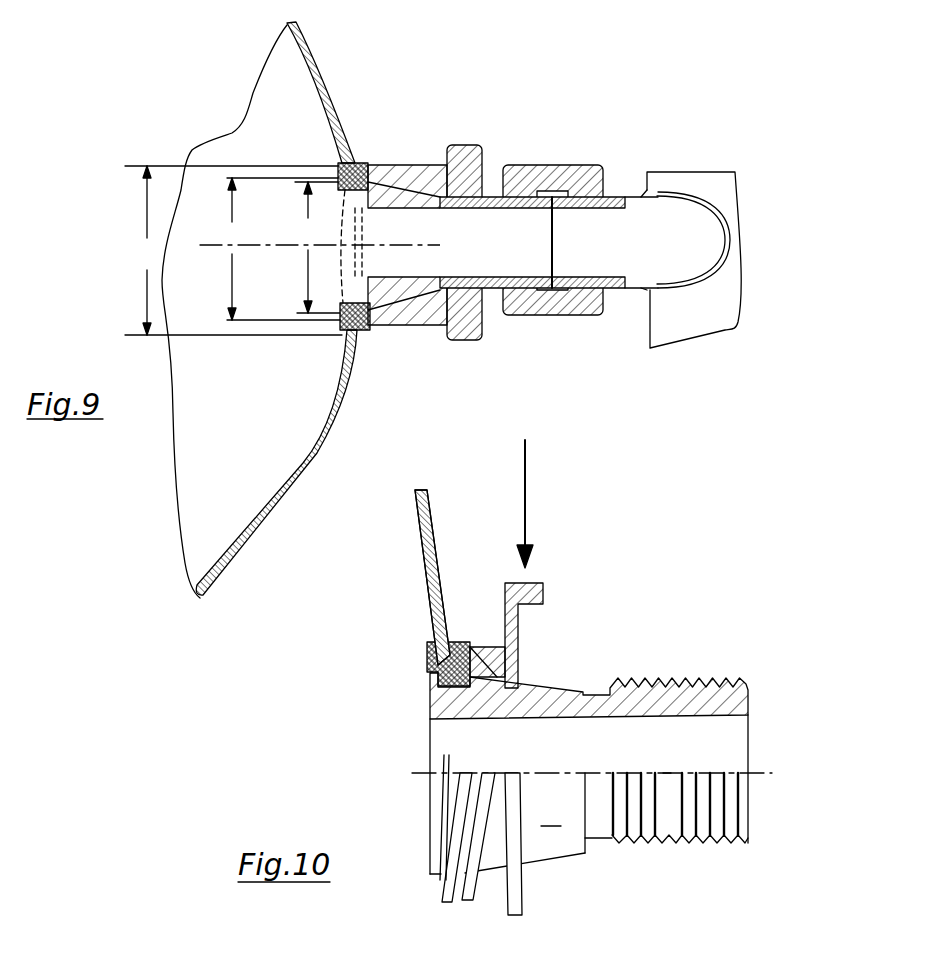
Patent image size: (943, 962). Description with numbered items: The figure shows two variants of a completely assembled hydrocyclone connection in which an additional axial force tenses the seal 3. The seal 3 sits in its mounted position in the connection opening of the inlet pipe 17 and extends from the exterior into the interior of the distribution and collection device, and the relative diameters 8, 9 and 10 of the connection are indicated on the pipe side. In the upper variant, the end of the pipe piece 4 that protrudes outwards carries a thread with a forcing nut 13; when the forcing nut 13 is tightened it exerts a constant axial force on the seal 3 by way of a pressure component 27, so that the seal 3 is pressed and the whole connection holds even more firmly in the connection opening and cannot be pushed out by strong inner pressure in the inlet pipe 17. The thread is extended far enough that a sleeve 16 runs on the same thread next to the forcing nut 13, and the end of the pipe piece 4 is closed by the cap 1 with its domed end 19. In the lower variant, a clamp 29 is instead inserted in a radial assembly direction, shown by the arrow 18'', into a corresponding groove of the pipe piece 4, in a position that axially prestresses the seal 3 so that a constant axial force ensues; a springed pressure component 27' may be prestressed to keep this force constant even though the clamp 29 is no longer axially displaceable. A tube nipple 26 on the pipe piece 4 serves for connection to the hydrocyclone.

In FIG. 9, the cap / end piece 1 is at (697, 305).
In FIG. 9, the seal 3 is at (362, 163).
In FIG. 10, the seal 3 is at (423, 665).
In FIG. 9, the pipe piece 4 is at (385, 187).
In FIG. 10, the pipe piece 4 is at (742, 738).
In FIG. 9, the relative diameter 8 is at (233, 250).
In FIG. 9, the relative diameter 9 is at (281, 249).
In FIG. 9, the relative diameter 10 is at (315, 247).
In FIG. 9, the forcing nut 13 is at (465, 160).
In FIG. 9, the sleeve 16 is at (560, 170).
In FIG. 9, the inlet pipe 17 is at (307, 45).
In FIG. 10, the inlet pipe 17 is at (422, 535).
In FIG. 9, the dome / bulb 19 is at (653, 237).
In FIG. 10, the tube nipple 26 is at (748, 810).
In FIG. 9, the pressure component 27 is at (407, 352).
In FIG. 10, the springed pressure component 27' is at (485, 595).
In FIG. 10, the clamp 29 is at (520, 647).
In FIG. 10, the arrow 18'' is at (581, 514).